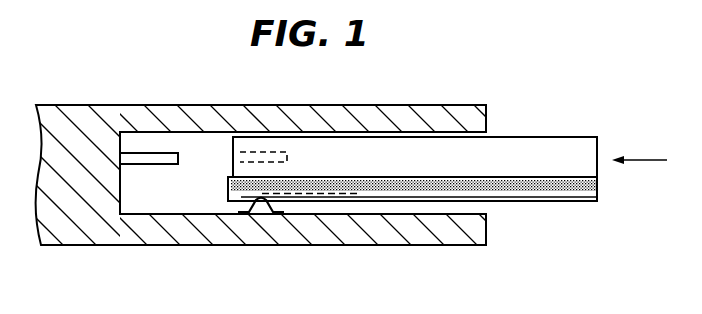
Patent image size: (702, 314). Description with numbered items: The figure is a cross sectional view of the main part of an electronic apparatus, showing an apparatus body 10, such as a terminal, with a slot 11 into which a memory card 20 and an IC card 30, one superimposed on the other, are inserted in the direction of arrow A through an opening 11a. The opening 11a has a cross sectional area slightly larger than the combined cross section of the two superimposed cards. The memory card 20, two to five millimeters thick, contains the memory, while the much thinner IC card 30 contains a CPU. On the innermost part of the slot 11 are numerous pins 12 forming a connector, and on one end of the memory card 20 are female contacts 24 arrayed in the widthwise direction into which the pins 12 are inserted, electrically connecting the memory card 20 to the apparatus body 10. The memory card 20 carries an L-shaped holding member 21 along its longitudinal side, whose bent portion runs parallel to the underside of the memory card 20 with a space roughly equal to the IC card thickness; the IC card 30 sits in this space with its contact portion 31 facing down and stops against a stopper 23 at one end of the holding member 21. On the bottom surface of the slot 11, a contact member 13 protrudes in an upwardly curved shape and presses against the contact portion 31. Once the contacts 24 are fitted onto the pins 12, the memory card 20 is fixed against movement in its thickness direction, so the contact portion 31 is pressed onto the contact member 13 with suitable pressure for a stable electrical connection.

The apparatus body 10 is at (88, 112).
The slot 11 is at (207, 146).
The opening 11a is at (488, 132).
The pins 12 is at (158, 165).
The contact member 13 is at (263, 212).
The memory card 20 is at (563, 137).
The holding member 21 is at (578, 203).
The stopper 23 is at (226, 196).
The female contacts 24 is at (287, 160).
The IC card 30 is at (525, 192).
The contact portion 31 is at (337, 197).
The arrow A is at (639, 148).